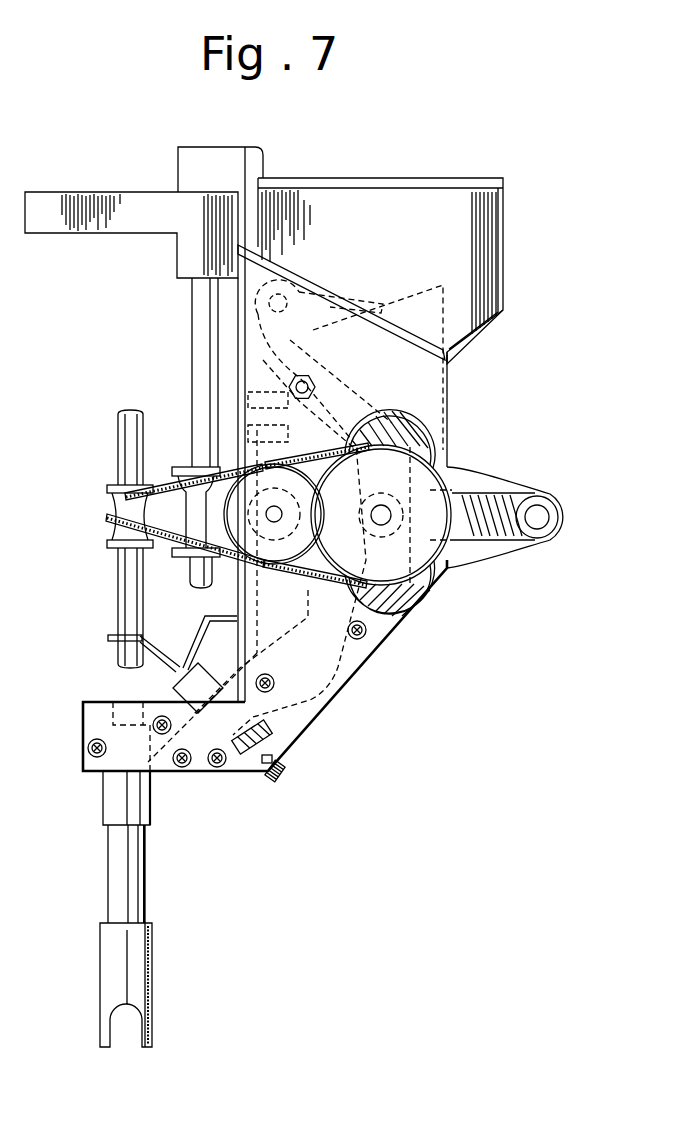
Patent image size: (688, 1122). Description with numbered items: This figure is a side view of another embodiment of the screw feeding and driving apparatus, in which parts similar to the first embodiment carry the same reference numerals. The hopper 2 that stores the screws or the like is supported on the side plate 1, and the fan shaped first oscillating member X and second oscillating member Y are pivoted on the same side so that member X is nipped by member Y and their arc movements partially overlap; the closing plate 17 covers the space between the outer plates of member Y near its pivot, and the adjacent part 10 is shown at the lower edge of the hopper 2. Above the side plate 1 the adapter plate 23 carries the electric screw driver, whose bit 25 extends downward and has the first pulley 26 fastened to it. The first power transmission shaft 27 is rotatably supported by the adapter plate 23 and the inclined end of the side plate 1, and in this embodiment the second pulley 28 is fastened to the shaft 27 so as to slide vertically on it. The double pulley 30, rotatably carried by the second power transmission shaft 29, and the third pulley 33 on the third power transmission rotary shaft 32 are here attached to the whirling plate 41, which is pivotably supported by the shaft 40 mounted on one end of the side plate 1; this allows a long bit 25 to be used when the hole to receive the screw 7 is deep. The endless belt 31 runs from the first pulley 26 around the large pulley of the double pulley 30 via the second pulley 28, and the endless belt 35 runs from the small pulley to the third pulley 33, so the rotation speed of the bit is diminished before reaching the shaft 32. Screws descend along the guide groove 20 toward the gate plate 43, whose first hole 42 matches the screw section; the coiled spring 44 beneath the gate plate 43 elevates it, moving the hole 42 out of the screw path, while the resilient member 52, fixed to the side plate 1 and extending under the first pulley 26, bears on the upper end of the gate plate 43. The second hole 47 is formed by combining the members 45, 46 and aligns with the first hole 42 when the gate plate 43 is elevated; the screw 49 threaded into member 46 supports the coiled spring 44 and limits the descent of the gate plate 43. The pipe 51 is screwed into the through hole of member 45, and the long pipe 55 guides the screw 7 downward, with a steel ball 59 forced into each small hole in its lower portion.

The side plate 1 is at (370, 640).
The hopper 2 is at (505, 231).
The screw 7 is at (252, 402).
The plate corner 10 is at (455, 338).
The closing plate 17 is at (348, 295).
The guide groove 20 is at (250, 590).
The adapter plate 23 is at (118, 225).
The bit 25 is at (125, 452).
The first pulley 26 is at (107, 543).
The first power transmission shaft 27 is at (202, 340).
The second pulley 28 is at (180, 560).
The second power transmission shaft 29 is at (267, 507).
The double pulley 30 is at (278, 557).
The endless belt 31 is at (108, 517).
The third power transmission rotary shaft 32 is at (385, 510).
The third pulley 33 is at (437, 508).
The endless belt 35 is at (318, 458).
The shaft 40 is at (539, 520).
The whirling plate 41 is at (475, 530).
The first hole 42 is at (200, 772).
The gate plate 43 is at (173, 687).
The coiled spring 44 is at (270, 727).
The member 45 is at (90, 730).
The member 46 is at (235, 767).
The second hole 47 is at (157, 757).
The screw 49 is at (282, 770).
The pipe 51 is at (113, 807).
The resilient member 52 is at (187, 648).
The long pipe 55 is at (138, 895).
The steel ball 59 is at (138, 973).
The first oscillating member X is at (437, 388).
The second oscillating member Y is at (295, 296).